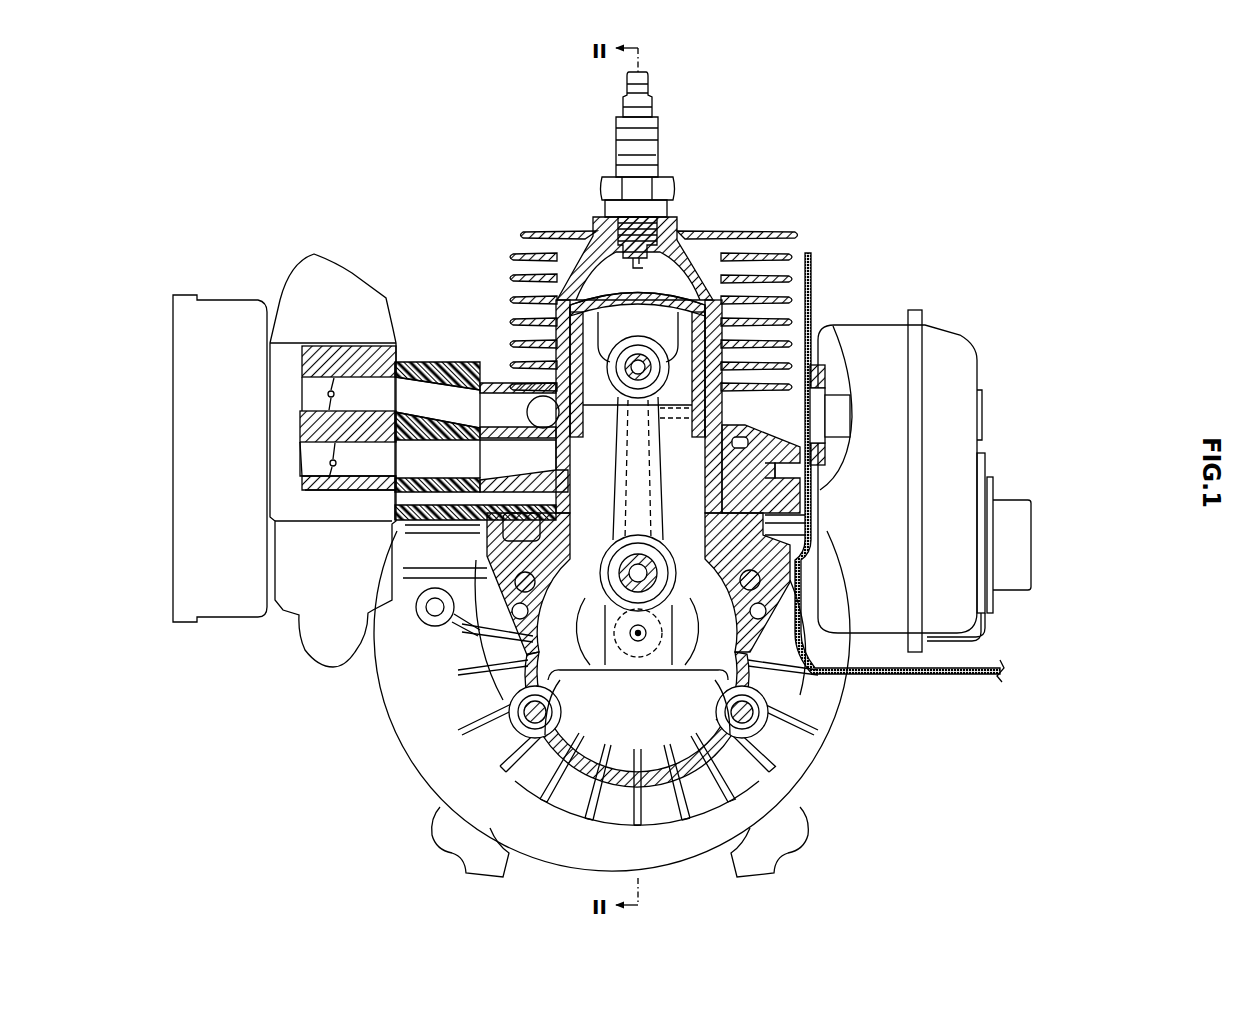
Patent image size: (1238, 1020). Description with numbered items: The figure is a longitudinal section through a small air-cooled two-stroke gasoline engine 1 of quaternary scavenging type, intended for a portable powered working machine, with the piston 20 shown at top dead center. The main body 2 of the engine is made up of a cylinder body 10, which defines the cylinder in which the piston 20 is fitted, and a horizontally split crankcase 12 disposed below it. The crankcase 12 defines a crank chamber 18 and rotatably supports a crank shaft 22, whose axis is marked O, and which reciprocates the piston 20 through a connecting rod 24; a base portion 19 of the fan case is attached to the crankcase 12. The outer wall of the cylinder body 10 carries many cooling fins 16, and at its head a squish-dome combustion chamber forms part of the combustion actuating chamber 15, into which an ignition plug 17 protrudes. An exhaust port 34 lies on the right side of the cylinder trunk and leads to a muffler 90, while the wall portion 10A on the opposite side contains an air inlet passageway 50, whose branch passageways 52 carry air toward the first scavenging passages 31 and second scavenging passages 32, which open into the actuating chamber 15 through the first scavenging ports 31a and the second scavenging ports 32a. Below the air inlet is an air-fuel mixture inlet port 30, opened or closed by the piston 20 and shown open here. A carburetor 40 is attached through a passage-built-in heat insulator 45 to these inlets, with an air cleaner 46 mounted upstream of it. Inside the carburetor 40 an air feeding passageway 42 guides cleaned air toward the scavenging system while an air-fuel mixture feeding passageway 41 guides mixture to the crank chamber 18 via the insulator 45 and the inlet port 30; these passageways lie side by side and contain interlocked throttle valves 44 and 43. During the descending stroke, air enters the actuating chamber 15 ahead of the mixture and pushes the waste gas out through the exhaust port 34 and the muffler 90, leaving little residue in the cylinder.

The two-stroke internal combustion engine 1 is at (410, 187).
The main body 2 is at (444, 294).
The cylinder body 10 is at (512, 252).
The wall portion 10A is at (517, 336).
The crankcase 12 is at (681, 752).
The combustion actuating chamber 15 is at (612, 270).
The cooling fins 16 is at (516, 282).
The ignition plug 17 is at (668, 222).
The crank chamber 18 is at (553, 638).
The base portion of the fan case 19 is at (803, 752).
The piston 20 is at (677, 257).
The crank shaft 22 is at (660, 648).
The connecting rod 24 is at (748, 487).
The air-fuel mixture inlet port 30 is at (604, 417).
The first scavenging passages 31 is at (592, 500).
The first scavenging ports 31a is at (528, 416).
The second scavenging passages 32 is at (683, 510).
The second scavenging ports 32a is at (662, 412).
The exhaust port 34 is at (814, 427).
The carburetor 40 is at (356, 262).
The air-fuel mixture feeding passageway 41 is at (365, 466).
The air feeding passageway 42 is at (373, 384).
The throttle valve 43 is at (339, 492).
The throttle valve 44 is at (333, 374).
The passage-built-in heat insulator 45 is at (428, 368).
The air cleaner 46 is at (228, 300).
The air inlet passageway 50 is at (510, 403).
The branch passageways 52 is at (519, 517).
The muffler 90 is at (866, 322).
The crankshaft axis O is at (647, 633).